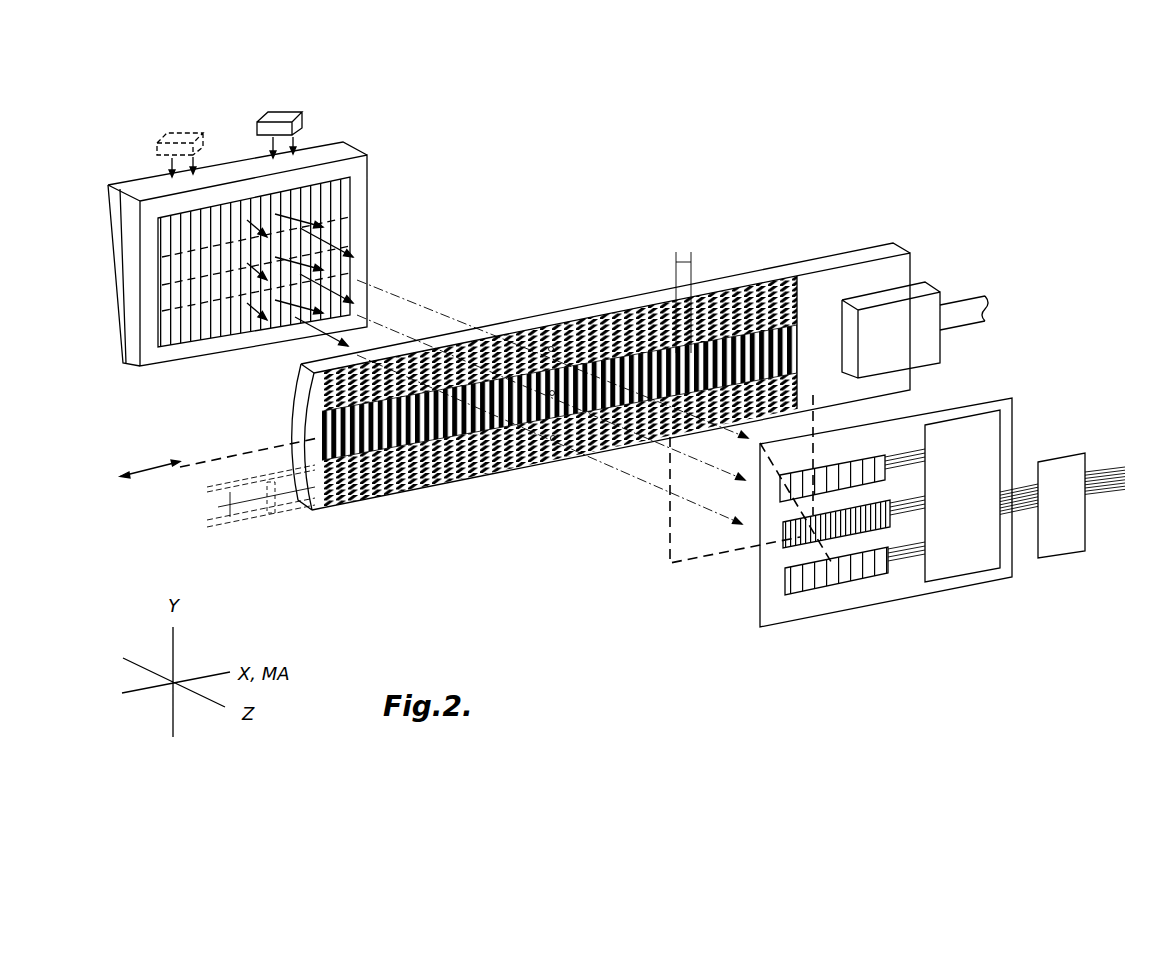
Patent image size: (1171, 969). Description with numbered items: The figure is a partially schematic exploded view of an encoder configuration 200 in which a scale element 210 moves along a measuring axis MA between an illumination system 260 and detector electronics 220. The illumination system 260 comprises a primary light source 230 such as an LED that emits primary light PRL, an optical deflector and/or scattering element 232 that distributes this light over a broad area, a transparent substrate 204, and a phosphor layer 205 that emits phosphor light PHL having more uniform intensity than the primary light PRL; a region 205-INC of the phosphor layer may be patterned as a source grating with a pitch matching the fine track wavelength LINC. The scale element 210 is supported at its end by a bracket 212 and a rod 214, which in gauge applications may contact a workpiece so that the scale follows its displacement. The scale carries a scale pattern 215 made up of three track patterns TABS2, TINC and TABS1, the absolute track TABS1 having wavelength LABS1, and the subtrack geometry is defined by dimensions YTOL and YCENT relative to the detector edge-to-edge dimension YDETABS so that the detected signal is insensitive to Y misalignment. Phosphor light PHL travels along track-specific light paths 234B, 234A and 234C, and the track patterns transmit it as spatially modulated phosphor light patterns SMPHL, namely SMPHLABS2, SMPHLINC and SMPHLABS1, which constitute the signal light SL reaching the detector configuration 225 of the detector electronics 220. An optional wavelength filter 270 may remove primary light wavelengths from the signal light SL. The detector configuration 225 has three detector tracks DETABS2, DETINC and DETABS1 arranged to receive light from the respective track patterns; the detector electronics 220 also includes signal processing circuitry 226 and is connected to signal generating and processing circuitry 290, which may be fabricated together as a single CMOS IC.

The encoder configuration 200 is at (990, 90).
The primary light source 230 is at (176, 136).
The optical deflector and/or scattering element 232 is at (355, 148).
The transparent substrate 204 is at (363, 170).
The phosphor layer 205 is at (352, 200).
The illumination system 260 is at (300, 210).
The scale element 210 is at (641, 314).
The scale pattern 215 is at (656, 313).
The bracket 212 is at (942, 347).
The rod 214 is at (972, 298).
The detector electronics 220 is at (917, 546).
The detector configuration 225 is at (927, 572).
The signal processing circuitry 226 is at (932, 425).
The signal generating and processing circuitry 290 is at (1043, 461).
The wavelength filter 270 is at (703, 560).
The track-specific light path 234A is at (385, 330).
The track-specific light path 234B is at (372, 335).
The track-specific light path 234C is at (398, 335).
The primary light PRL is at (166, 170).
The phosphor light PHL is at (383, 190).
The phosphor area region 205-INC is at (160, 272).
The fine track wavelength LINC is at (688, 251).
The absolute scale track pattern TABS2 is at (787, 275).
The fine scale track pattern TINC is at (800, 343).
The absolute scale track pattern TABS1 is at (810, 387).
The detector track DETABS2 is at (868, 480).
The detector track DETINC is at (862, 525).
The detector track DETABS1 is at (855, 574).
The spatially modulated phosphor light patterns SMPHL is at (594, 517).
The spatially modulated phosphor light pattern SMPHLABS2 is at (745, 442).
The spatially modulated phosphor light pattern SMPHLINC is at (742, 484).
The spatially modulated phosphor light pattern SMPHLABS1 is at (740, 527).
The signal light SL is at (724, 562).
The measuring axis MA is at (160, 462).
The Y direction dimension of subtrack portion YTOL is at (205, 489).
The Y direction separation dimension YCENT is at (218, 508).
The Y direction edge-to-edge dimension YDETABS is at (276, 500).
The wavelength of absolute track pattern TABS1 LABS1 is at (472, 487).